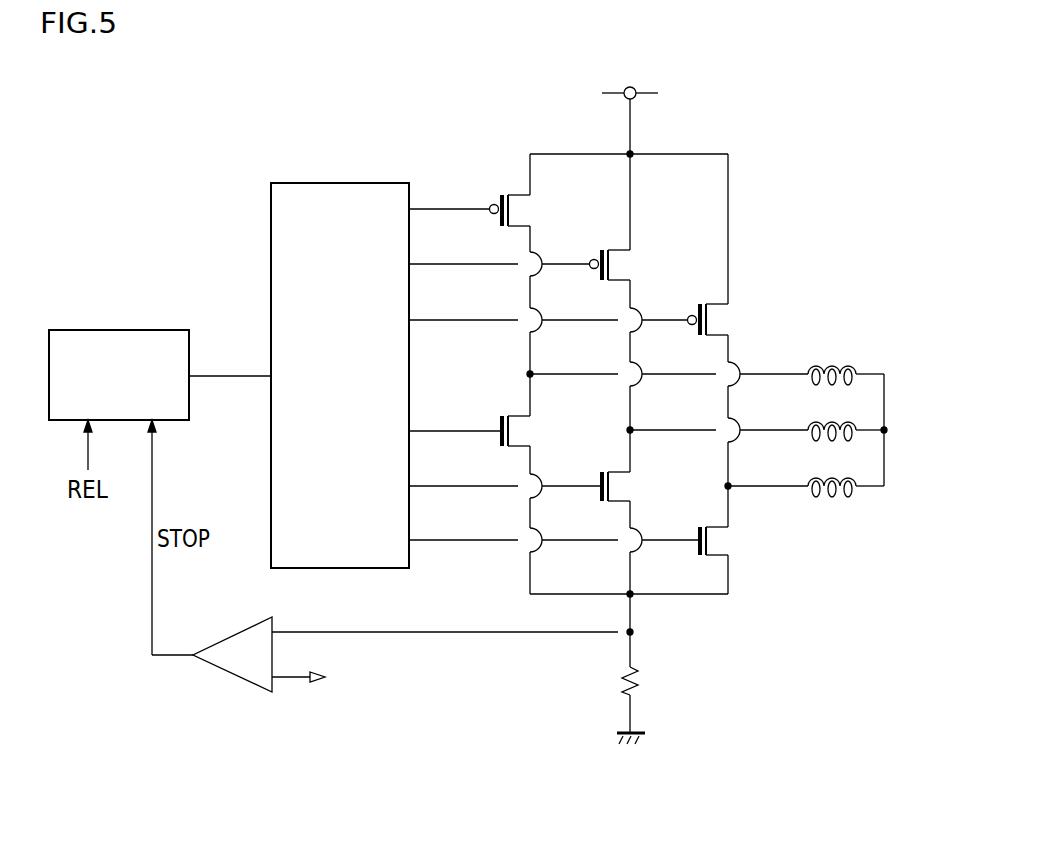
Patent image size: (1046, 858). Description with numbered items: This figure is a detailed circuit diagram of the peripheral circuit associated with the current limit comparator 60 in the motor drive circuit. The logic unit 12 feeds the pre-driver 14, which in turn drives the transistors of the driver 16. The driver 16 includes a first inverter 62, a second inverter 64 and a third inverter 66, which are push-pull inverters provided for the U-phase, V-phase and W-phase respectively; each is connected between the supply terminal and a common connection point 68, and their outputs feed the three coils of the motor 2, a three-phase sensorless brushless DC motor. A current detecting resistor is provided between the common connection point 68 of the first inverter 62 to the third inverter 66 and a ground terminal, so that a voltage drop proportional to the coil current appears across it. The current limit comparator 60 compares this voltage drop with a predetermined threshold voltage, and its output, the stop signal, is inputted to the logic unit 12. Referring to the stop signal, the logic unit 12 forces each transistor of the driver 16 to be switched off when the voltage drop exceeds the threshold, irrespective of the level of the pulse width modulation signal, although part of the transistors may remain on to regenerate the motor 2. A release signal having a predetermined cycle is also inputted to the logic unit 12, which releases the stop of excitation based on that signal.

The motor 2 is at (892, 502).
The logic unit 12 is at (120, 330).
The pre-driver 14 is at (342, 183).
The driver 16 is at (640, 437).
The current limit comparator 60 is at (222, 668).
The first inverter 62 is at (542, 198).
The second inverter 64 is at (640, 207).
The third inverter 66 is at (740, 207).
The common connection point 68 is at (634, 598).